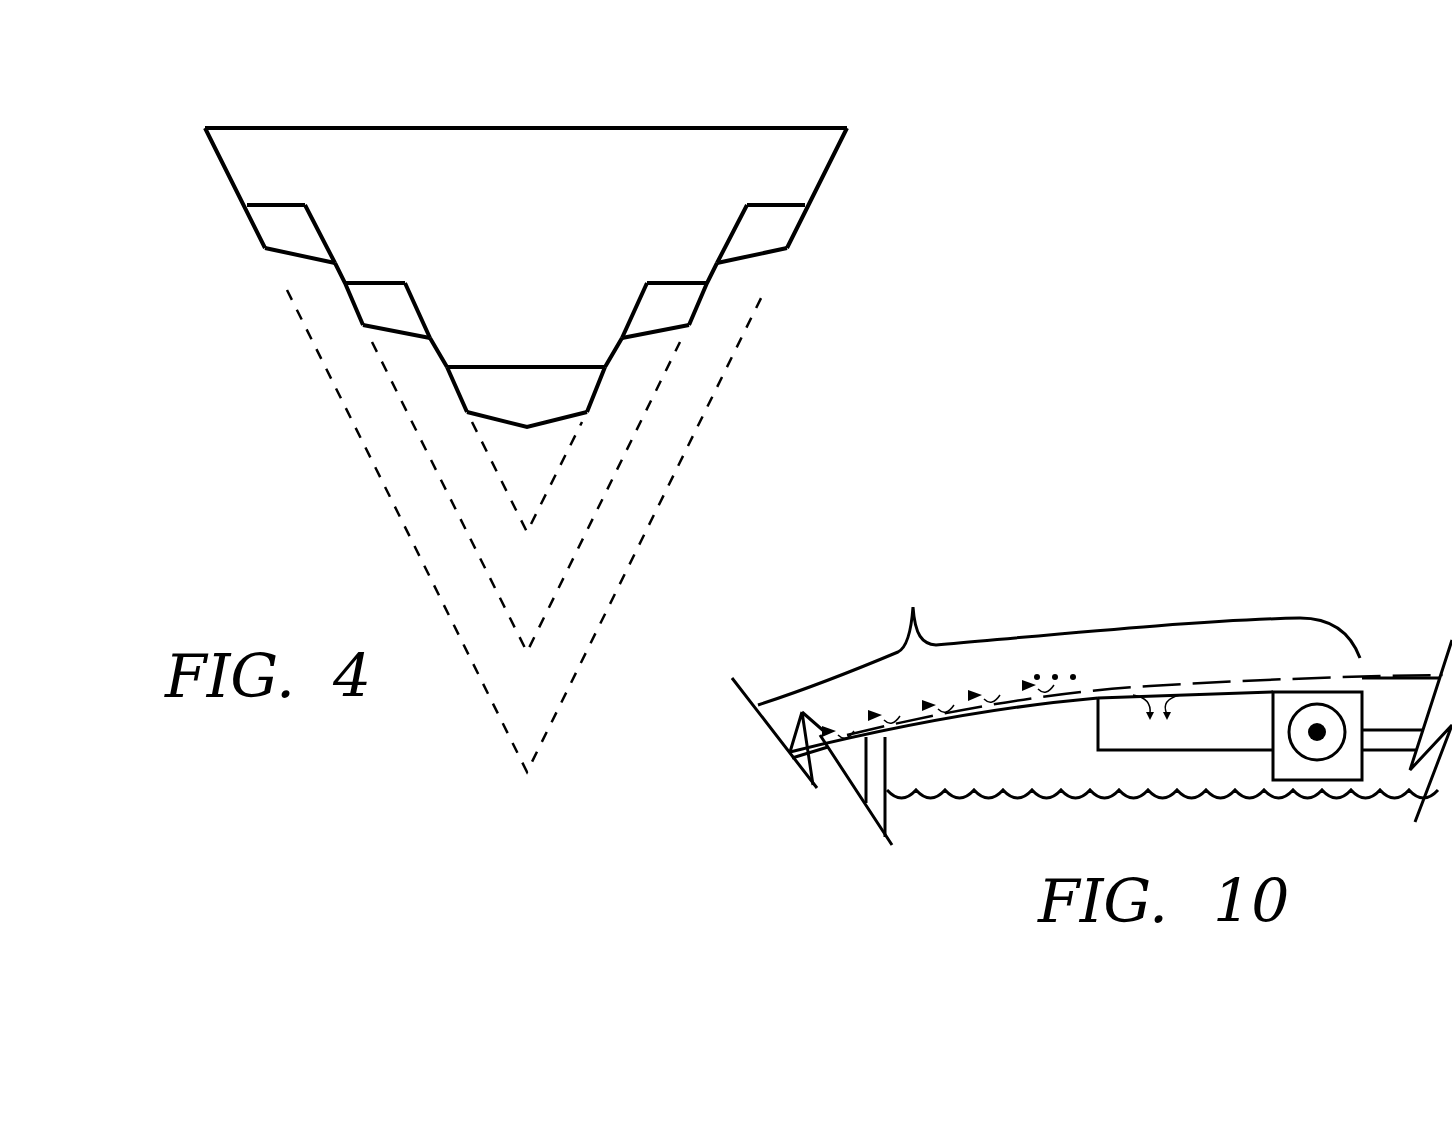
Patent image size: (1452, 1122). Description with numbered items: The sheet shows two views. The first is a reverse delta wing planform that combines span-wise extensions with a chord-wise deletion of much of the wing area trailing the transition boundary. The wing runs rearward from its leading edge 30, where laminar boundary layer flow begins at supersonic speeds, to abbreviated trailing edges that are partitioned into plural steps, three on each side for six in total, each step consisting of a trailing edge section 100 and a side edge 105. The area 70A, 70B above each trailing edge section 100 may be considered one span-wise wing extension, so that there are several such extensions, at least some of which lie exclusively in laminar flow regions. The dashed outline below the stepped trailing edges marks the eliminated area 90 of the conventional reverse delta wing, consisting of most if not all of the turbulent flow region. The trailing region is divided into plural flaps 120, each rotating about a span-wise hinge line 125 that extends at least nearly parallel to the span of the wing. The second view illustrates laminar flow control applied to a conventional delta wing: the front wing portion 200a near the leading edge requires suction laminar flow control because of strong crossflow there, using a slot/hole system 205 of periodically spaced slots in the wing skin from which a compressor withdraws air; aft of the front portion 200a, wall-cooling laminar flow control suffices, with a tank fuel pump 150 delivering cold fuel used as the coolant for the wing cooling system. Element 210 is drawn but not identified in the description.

In FIG. 4, the leading edge 30 is at (643, 128).
In FIG. 4, the span-wise wing extension area 70A is at (297, 168).
In FIG. 4, the span-wise wing extension area 70B is at (420, 253).
In FIG. 4, the eliminated area 90 is at (545, 577).
In FIG. 4, the trailing edge section 100 is at (731, 272).
In FIG. 4, the side edge 105 is at (250, 218).
In FIG. 4, the flap 120 is at (291, 230).
In FIG. 4, the hinge line 125 is at (356, 280).
In FIG. 10, the tank fuel pump 150 is at (1320, 725).
In FIG. 10, the front wing portion 200a is at (1059, 636).
In FIG. 10, the slot/hole system 205 is at (1092, 698).
In FIG. 10, the collection chamber 210 is at (1210, 717).